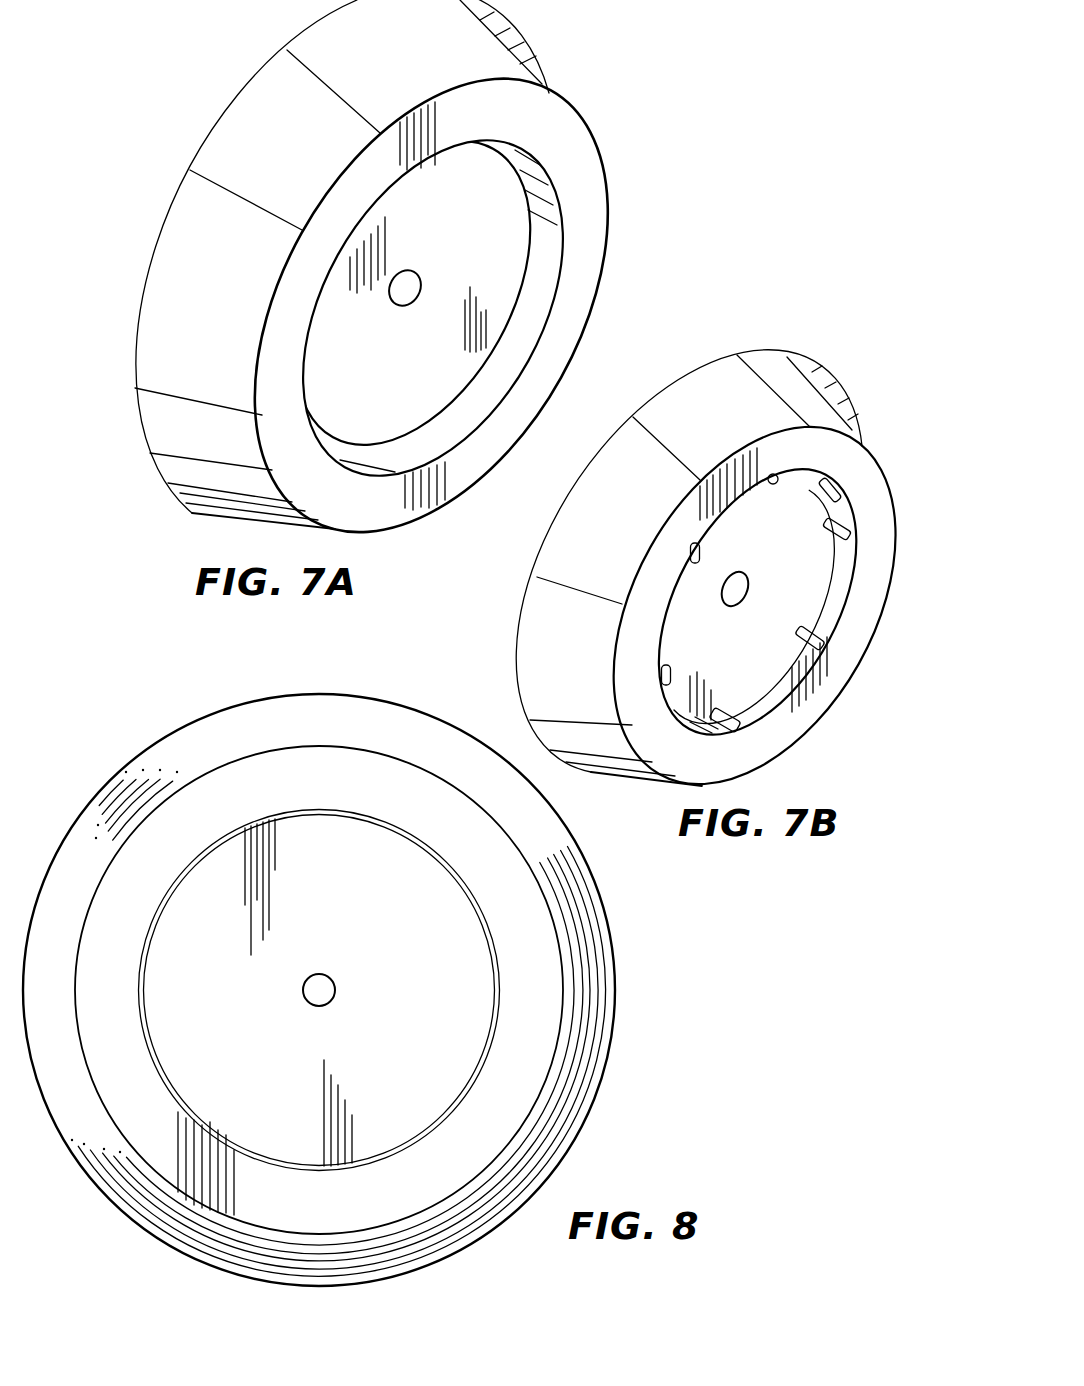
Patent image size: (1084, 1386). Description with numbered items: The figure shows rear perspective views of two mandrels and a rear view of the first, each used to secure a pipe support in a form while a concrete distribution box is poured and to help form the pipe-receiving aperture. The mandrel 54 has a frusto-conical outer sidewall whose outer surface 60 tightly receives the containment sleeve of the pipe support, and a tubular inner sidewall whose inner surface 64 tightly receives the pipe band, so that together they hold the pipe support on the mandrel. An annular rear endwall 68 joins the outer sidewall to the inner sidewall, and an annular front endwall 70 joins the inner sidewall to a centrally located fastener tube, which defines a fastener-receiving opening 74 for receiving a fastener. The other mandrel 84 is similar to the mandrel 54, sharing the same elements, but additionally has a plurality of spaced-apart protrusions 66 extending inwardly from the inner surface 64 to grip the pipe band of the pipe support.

In FIG. 7A, the mandrel 54 is at (408, 296).
In FIG. 8, the mandrel 54 is at (346, 973).
In FIG. 7A, the outer surface 60 is at (480, 43).
In FIG. 7B, the outer surface 60 is at (810, 412).
In FIG. 8, the outer surface 60 is at (245, 730).
In FIG. 7A, the inner surface 64 is at (536, 322).
In FIG. 7B, the inner surface 64 is at (840, 487).
In FIG. 8, the inner surface 64 is at (355, 818).
In FIG. 7B, the protrusions 66 is at (773, 472).
In FIG. 7A, the annular rear endwall 68 is at (575, 290).
In FIG. 8, the annular rear endwall 68 is at (537, 998).
In FIG. 7A, the annular front endwall 70 is at (470, 210).
In FIG. 7B, the annular front endwall 70 is at (757, 643).
In FIG. 8, the annular front endwall 70 is at (427, 1063).
In FIG. 7A, the fastener-receiving opening 74 is at (406, 308).
In FIG. 7B, the fastener-receiving opening 74 is at (729, 605).
In FIG. 8, the fastener-receiving opening 74 is at (334, 979).
In FIG. 7B, the mandrel 84 is at (734, 558).